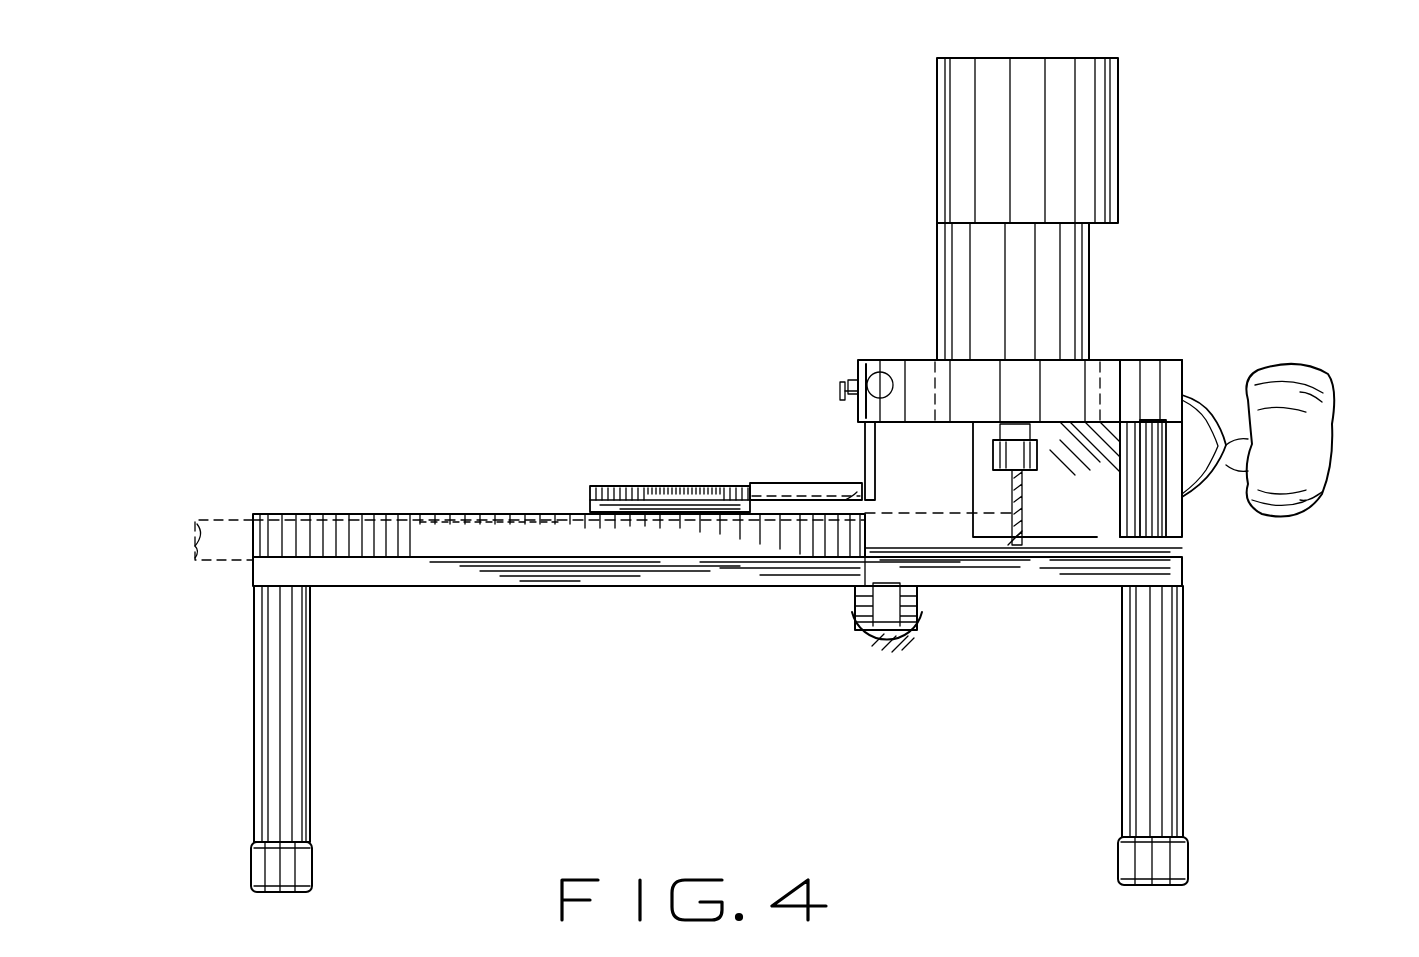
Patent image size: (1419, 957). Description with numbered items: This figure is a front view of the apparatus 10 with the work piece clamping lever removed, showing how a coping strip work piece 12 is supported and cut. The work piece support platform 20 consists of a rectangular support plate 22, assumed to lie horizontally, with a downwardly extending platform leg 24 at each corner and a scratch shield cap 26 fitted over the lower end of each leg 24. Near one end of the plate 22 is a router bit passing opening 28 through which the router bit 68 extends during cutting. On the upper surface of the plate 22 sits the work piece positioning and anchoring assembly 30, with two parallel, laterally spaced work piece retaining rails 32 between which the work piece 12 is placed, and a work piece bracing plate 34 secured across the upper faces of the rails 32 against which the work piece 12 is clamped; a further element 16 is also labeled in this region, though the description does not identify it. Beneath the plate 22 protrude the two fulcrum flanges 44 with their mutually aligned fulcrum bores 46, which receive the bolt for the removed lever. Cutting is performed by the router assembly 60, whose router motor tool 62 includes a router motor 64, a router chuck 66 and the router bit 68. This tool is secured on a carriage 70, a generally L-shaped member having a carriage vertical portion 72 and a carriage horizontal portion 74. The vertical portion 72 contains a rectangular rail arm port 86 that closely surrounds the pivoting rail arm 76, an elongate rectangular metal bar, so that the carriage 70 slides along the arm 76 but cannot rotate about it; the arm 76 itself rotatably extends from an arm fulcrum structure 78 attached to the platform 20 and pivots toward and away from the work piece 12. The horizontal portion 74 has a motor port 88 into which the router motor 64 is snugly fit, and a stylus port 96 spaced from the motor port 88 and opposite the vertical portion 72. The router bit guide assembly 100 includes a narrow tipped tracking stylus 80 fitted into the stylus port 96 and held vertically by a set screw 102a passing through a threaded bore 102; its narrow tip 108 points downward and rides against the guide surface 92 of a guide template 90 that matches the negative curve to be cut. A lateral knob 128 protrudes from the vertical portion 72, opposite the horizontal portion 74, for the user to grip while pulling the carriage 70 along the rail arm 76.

The apparatus 10 is at (1313, 177).
The work piece 12 is at (248, 515).
The fence 16 is at (765, 483).
The work piece support platform 20 is at (487, 587).
The support plate 22 is at (605, 587).
The platform leg 24 is at (312, 725).
The scratch shield cap 26 is at (314, 862).
The router bit passing opening 28 is at (1033, 545).
The work piece positioning and anchoring assembly 30 is at (587, 342).
The work piece retaining rails 32 is at (512, 515).
The work piece bracing plate 34 is at (650, 486).
The fulcrum flanges 44 is at (845, 632).
The fulcrum bores 46 is at (848, 610).
The router assembly 60 is at (842, 200).
The router motor tool 62 is at (1118, 100).
The router motor 64 is at (1100, 185).
The router chuck 66 is at (1044, 455).
The router bit 68 is at (1038, 490).
The carriage 70 is at (1186, 385).
The carriage vertical portion 72 is at (1114, 492).
The carriage horizontal portion 74 is at (892, 360).
The pivoting rail arm 76 is at (1185, 545).
The arm fulcrum structure 78 is at (1231, 289).
The tracking stylus 80 is at (838, 392).
The rail arm port 86 is at (1150, 492).
The motor port 88 is at (937, 332).
The guide template 90 is at (705, 486).
The guide surface 92 is at (865, 462).
The stylus port 96 is at (853, 380).
The router bit guide assembly 100 is at (710, 218).
The threaded bore 102 is at (875, 373).
The set screw 102a is at (860, 412).
The narrow tip 108 is at (855, 500).
The lateral knob 128 is at (1305, 380).